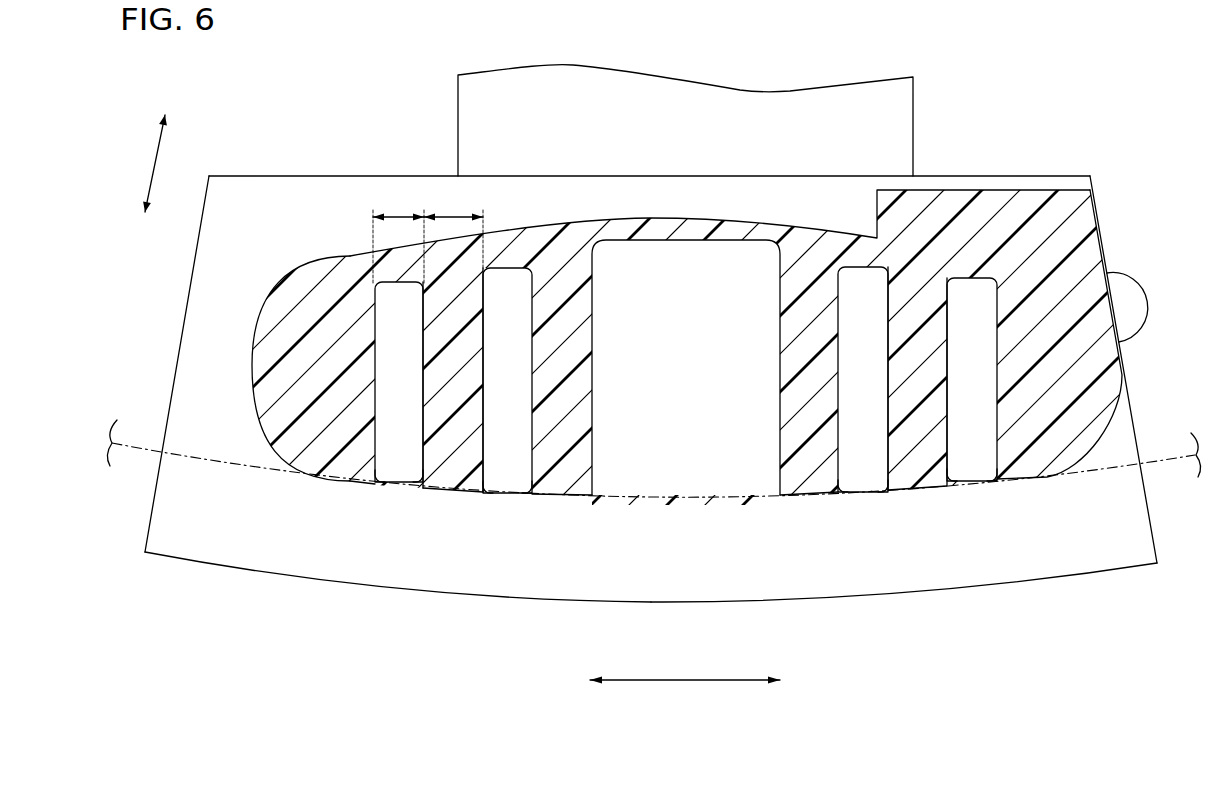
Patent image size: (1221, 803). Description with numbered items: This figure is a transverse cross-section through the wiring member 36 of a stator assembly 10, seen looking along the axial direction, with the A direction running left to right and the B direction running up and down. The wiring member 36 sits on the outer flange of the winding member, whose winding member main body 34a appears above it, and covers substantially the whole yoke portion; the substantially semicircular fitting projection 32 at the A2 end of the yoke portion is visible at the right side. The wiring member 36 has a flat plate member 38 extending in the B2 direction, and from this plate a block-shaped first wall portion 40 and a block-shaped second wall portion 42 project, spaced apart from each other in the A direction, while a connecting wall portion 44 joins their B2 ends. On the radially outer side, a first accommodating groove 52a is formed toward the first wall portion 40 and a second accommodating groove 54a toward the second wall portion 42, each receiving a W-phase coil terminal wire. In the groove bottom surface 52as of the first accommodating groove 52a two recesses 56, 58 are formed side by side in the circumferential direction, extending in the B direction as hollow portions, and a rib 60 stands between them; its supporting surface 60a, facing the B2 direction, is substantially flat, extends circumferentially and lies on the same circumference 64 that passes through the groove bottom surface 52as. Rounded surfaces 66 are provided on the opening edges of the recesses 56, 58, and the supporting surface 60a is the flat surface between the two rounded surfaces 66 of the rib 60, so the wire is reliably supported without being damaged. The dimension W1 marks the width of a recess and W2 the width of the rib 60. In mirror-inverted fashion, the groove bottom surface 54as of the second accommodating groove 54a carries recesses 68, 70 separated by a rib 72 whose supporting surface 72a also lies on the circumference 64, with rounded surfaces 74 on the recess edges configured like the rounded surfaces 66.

The core body 10 is at (323, 60).
The fitting projection 32 is at (1134, 303).
The winding member main body 34a is at (813, 102).
The wiring member 36 is at (1098, 197).
The flat plate member 38 is at (168, 537).
The first wall portion 40 is at (297, 293).
The second wall portion 42 is at (1090, 248).
The connecting wall portion 44 is at (670, 225).
The first accommodating groove 52a is at (342, 562).
The groove bottom surface 52as is at (553, 496).
The second accommodating groove 54a is at (1053, 562).
The groove bottom surface 54as is at (802, 496).
The recess 56 is at (383, 337).
The recess 58 is at (512, 282).
The rib 60 is at (457, 480).
The supporting surface 60a is at (453, 477).
The circumference 64 is at (1173, 458).
The rounded surfaces 66 is at (375, 483).
The recess 68 is at (862, 283).
The recess 70 is at (973, 307).
The rib 72 is at (930, 470).
The supporting surface 72a is at (908, 488).
The rounded surfaces 74 is at (838, 493).
The slot width W1 is at (398, 238).
The rib width W2 is at (453, 231).
The A direction A is at (687, 690).
The B direction B is at (156, 167).